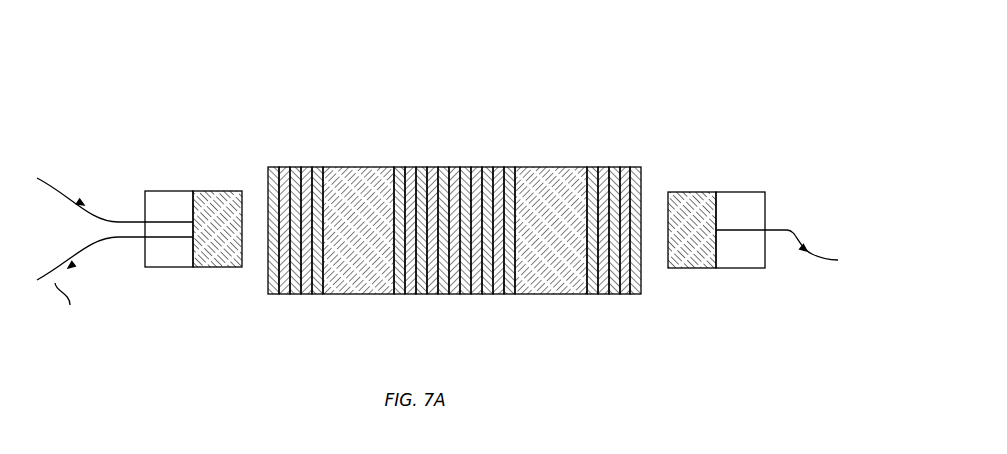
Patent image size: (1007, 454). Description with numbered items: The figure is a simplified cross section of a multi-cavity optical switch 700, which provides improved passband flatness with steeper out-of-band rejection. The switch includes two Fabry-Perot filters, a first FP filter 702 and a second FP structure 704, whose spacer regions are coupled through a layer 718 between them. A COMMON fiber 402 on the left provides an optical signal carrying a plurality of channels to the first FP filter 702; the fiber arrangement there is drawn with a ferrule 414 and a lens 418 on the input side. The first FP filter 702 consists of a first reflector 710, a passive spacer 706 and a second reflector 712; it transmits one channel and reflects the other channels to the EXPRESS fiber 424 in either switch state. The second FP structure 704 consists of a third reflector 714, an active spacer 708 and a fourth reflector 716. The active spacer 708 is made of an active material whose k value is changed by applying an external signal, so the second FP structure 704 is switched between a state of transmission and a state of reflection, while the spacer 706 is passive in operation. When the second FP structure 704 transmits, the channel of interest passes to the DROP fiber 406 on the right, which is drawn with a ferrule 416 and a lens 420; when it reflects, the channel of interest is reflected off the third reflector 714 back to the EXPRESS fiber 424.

The multi-cavity optical switch 700 is at (712, 77).
The COMMON fiber 402 is at (37, 178).
The EXPRESS fiber 424 is at (86, 251).
The first dual-fiber collimator ferrule 414 is at (167, 268).
The first collimating lens 418 is at (223, 268).
The first FP filter 702 is at (359, 241).
The first reflector 710 is at (323, 296).
The passive spacer 706 is at (353, 295).
The second reflector 712 is at (450, 296).
The layer 718 is at (452, 295).
The second FP structure 704 is at (550, 224).
The third reflector 714 is at (515, 165).
The active spacer 708 is at (558, 167).
The fourth reflector 716 is at (641, 165).
The second single-fiber collimator ferrule 416 is at (765, 208).
The second collimating lens 420 is at (693, 269).
The DROP fiber 406 is at (818, 255).